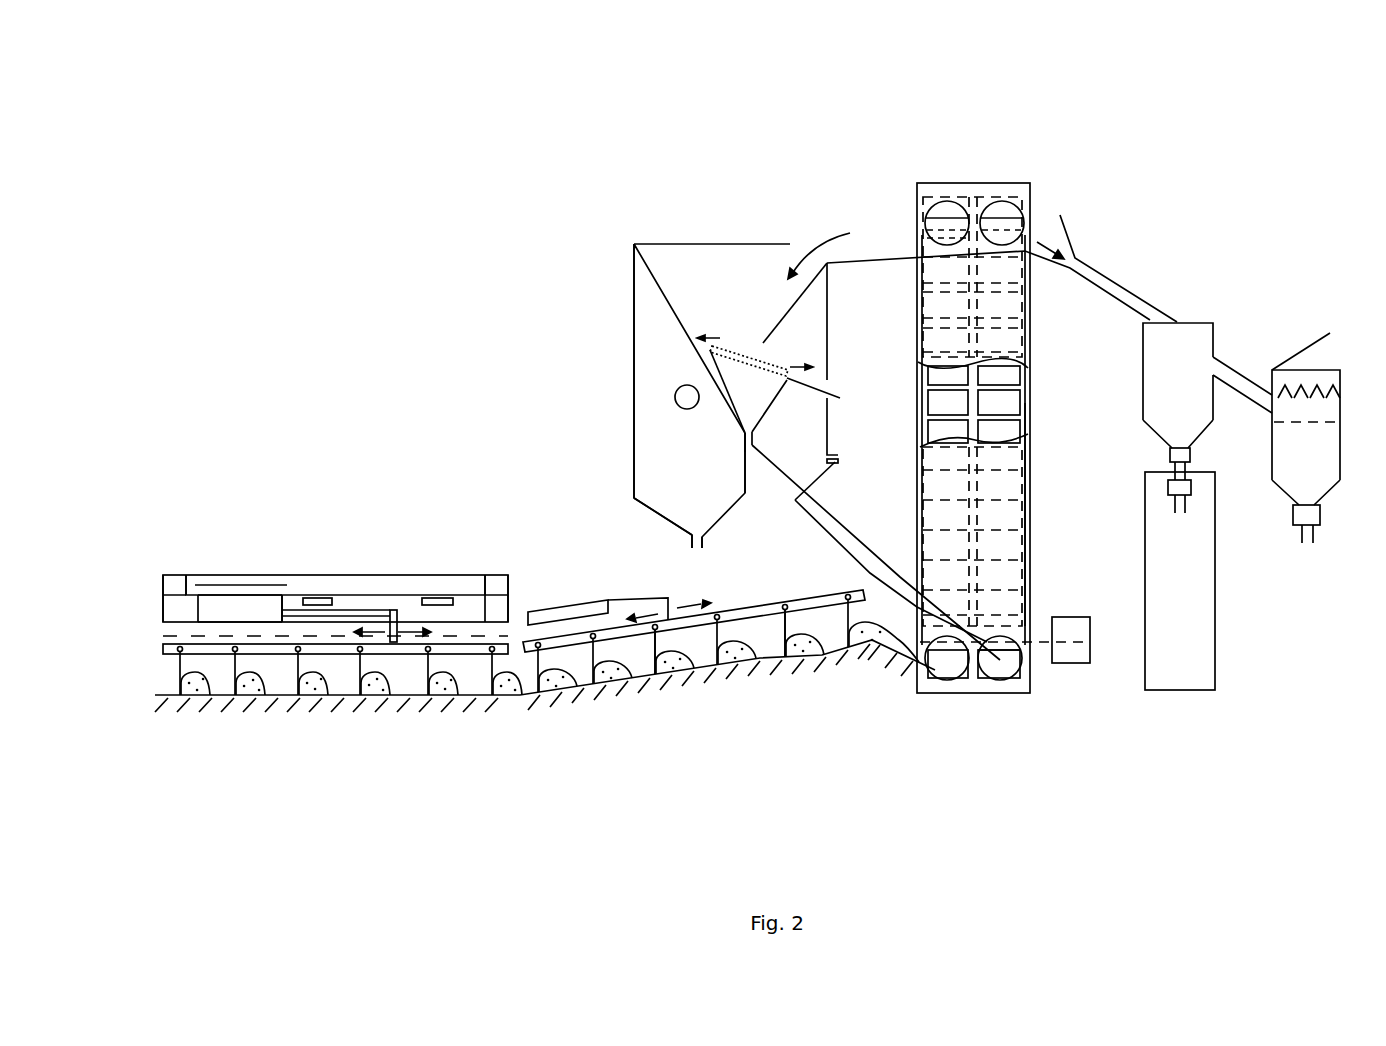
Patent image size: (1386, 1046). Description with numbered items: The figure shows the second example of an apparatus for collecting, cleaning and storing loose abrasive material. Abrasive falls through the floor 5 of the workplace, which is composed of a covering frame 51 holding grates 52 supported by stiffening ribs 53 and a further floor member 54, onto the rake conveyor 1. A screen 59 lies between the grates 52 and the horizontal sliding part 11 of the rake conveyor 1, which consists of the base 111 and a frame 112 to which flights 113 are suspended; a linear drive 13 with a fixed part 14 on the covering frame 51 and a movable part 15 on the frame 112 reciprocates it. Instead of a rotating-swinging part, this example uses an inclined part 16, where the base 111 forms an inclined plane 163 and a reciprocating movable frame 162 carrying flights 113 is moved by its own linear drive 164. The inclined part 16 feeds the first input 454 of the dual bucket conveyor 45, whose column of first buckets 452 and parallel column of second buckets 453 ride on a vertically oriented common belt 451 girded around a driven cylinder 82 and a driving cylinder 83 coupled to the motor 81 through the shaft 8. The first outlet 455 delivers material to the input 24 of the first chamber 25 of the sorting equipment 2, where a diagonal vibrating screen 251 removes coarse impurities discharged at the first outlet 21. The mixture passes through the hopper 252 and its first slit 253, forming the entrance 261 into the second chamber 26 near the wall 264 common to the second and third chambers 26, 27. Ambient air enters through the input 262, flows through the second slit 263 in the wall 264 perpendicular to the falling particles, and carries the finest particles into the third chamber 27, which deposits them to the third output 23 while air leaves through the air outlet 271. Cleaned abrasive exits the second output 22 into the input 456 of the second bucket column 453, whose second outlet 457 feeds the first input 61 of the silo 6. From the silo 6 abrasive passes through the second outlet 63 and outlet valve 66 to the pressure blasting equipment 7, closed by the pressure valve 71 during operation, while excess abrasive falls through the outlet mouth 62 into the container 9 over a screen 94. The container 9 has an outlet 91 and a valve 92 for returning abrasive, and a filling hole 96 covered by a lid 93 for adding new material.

The rake conveyor 1 is at (403, 765).
The horizontal sliding part 11 is at (268, 740).
The base 111 is at (497, 697).
The frame 112 is at (215, 650).
The flights 113 is at (176, 667).
The floor 5 is at (140, 586).
The covering frame 51 is at (175, 575).
The grates 52 is at (385, 590).
The stiffening ribs 53 is at (315, 590).
The guide plate 54 is at (275, 585).
The linear drive 13 is at (258, 597).
The fixed part 14 is at (222, 598).
The movable part 15 is at (350, 590).
The screen 59 is at (178, 637).
The inclined part 16 is at (580, 553).
The reciprocating movable frame 162 is at (767, 610).
The inclined plane 163 is at (650, 677).
The linear drive 164 is at (553, 602).
The equipment for sorting loose material 2 is at (728, 230).
The first outlet 21 is at (840, 387).
The second output 22 is at (847, 548).
The third output 23 is at (688, 562).
The input 24 is at (827, 222).
The first chamber 25 is at (684, 260).
The second chamber 26 is at (845, 520).
The third chamber 27 is at (745, 493).
The vibrating screen 251 is at (765, 368).
The hopper 252 is at (748, 396).
The first slit 253 is at (753, 443).
The entrance 261 is at (790, 487).
The input 262 is at (840, 465).
The second slit 263 is at (740, 452).
The wall 264 is at (747, 468).
The air outlet 271 is at (687, 385).
The dual bucket conveyor 45 is at (930, 180).
The common belt 451 is at (1027, 403).
The first buckets 452 is at (937, 403).
The second buckets 453 is at (1007, 397).
The first input 454 is at (952, 670).
The first outlet 455 is at (940, 213).
The input 456 is at (990, 670).
The second outlet 457 is at (1000, 213).
The driven cylinder 82 is at (933, 233).
The driving cylinder 83 is at (1000, 660).
The shaft 8 is at (1042, 647).
The motor 81 is at (1053, 663).
The first input 61 is at (1097, 282).
The silo 6 is at (1180, 370).
The outlet mouth 62 is at (1235, 382).
The second outlet 63 is at (1182, 448).
The outlet valve 66 is at (1190, 457).
The pressure valve 71 is at (1168, 487).
The pressure blasting equipment 7 is at (1178, 655).
The container 9 is at (1303, 372).
The outlet 91 is at (1305, 543).
The valve 92 is at (1293, 517).
The lid 93 is at (1297, 354).
The screen 94 is at (1320, 422).
The filling hole 96 is at (1325, 385).